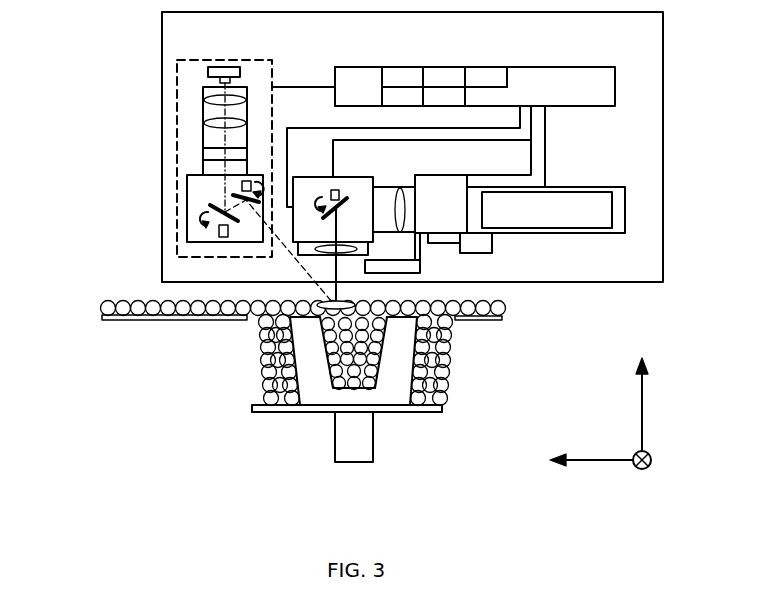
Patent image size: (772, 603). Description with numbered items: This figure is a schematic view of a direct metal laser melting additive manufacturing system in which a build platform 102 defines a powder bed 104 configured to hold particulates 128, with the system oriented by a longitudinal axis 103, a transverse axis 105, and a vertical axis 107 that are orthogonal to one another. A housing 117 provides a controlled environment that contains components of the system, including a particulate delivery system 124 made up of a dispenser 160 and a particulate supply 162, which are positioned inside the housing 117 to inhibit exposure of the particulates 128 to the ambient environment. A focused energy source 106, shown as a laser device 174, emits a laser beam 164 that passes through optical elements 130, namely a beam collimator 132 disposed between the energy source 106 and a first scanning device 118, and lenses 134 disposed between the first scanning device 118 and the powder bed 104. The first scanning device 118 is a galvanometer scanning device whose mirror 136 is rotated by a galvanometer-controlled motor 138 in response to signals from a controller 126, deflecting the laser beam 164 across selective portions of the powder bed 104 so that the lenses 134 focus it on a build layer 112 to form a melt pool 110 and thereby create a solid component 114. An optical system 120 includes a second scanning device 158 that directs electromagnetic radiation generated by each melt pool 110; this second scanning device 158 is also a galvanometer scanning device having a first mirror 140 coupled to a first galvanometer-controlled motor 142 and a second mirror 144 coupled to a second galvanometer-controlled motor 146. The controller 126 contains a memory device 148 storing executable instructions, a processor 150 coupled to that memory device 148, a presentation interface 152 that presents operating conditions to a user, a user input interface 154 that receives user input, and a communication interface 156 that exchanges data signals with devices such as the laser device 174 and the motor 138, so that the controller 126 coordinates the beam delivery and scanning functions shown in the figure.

The build platform 102 is at (373, 441).
The longitudinal axis 103 is at (593, 462).
The powder bed 104 is at (263, 370).
The transverse axis 105 is at (653, 466).
The energy source 106 is at (600, 215).
The vertical axis 107 is at (645, 408).
The melt pool 110 is at (340, 330).
The build layer 112 is at (512, 311).
The component 114 is at (446, 388).
The housing 117 is at (663, 254).
The first scanning device 118 is at (317, 177).
The optical system 120 is at (184, 50).
The particulate delivery system 124 is at (340, 256).
The controller 126 is at (563, 78).
The particulates 128 is at (102, 304).
The optical elements 130 is at (425, 178).
The beam collimator 132 is at (415, 230).
The lenses 134 is at (430, 320).
The mirror 136 is at (331, 200).
The galvanometer-controlled motor 138 is at (340, 192).
The first mirror 140 is at (207, 207).
The first galvanometer-controlled motor 142 is at (253, 178).
The second mirror 144 is at (222, 238).
The second galvanometer-controlled motor 146 is at (222, 218).
The memory device 148 is at (393, 78).
The processor 150 is at (450, 78).
The presentation interface 152 is at (498, 78).
The user input interface 154 is at (450, 98).
The communication interface 156 is at (393, 97).
The second scanning device 158 is at (183, 180).
The dispenser 160 is at (422, 268).
The particulate supply 162 is at (492, 246).
The laser beam 164 is at (458, 242).
The laser device 174 is at (610, 186).